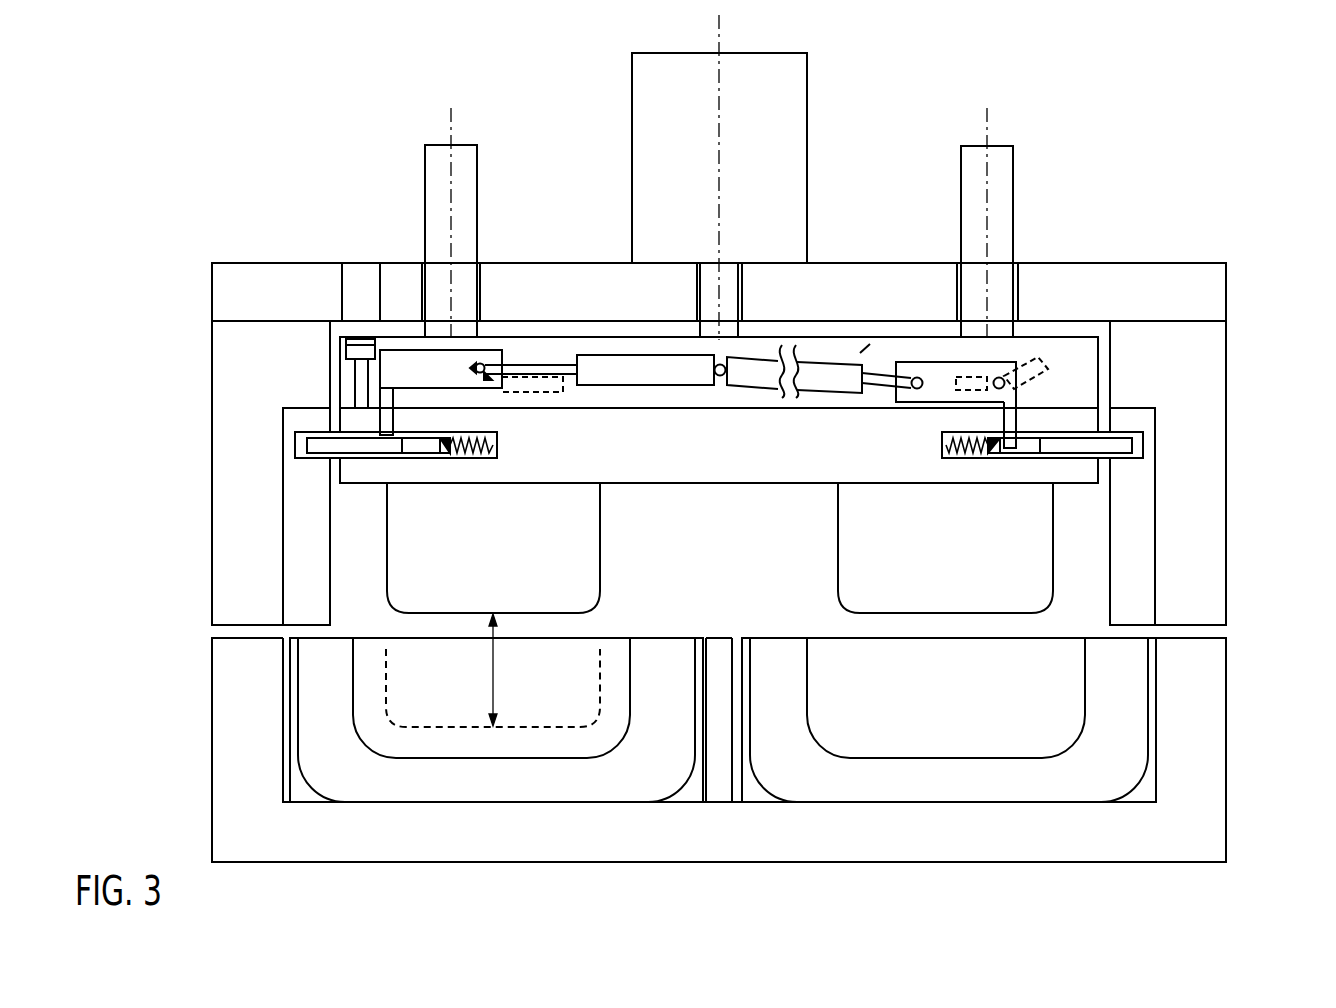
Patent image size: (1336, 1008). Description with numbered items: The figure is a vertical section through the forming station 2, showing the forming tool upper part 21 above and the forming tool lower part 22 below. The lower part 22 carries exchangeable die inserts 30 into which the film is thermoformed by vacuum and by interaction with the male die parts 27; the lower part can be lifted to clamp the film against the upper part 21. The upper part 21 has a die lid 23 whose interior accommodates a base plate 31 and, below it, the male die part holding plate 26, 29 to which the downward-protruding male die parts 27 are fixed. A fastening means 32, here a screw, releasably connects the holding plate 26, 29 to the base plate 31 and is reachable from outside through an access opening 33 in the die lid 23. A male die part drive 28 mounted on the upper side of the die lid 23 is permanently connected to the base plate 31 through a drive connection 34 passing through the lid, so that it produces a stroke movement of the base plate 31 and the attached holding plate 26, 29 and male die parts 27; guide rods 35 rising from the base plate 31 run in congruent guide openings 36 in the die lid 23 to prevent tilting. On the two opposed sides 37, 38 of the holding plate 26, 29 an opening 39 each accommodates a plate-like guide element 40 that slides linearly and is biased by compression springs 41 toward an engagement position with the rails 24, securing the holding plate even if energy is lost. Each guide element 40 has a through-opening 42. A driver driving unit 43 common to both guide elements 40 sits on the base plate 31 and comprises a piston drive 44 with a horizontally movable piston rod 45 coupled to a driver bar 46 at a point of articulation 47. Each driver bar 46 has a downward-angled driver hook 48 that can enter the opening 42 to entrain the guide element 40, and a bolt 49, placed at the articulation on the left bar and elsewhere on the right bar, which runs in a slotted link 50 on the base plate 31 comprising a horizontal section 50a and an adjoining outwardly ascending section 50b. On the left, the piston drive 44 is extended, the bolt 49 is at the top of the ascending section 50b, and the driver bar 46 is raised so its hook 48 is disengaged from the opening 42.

The forming station 2 is at (1206, 91).
The forming tool upper part 21 is at (1257, 342).
The forming tool lower part 22 is at (1257, 793).
The die lid 23 is at (228, 355).
The rails 24 is at (306, 447).
The male die part holding plate 26 is at (719, 502).
The male die part 27 is at (418, 570).
The male die part drive 28 is at (643, 82).
The male die part holding plate 29 is at (710, 478).
The die insert 30 is at (310, 758).
The base plate 31 is at (838, 345).
The fastening means 32 is at (345, 357).
The access opening 33 is at (344, 285).
The drive connection 34 is at (703, 290).
The guide rod 35 is at (437, 160).
The guide opening 36 is at (483, 302).
The side 37 is at (347, 468).
The side 38 is at (1090, 468).
The opening 39 is at (478, 468).
The guide element 40 is at (320, 443).
The spring 41 is at (482, 455).
The through-opening 42 is at (428, 468).
The driver driving unit 43 is at (859, 354).
The piston drive 44 is at (645, 385).
The piston rod 45 is at (553, 365).
The driver bar 46 is at (435, 382).
The point of articulation 47 is at (481, 362).
The driver hook 48 is at (388, 418).
The bolt 49 is at (1003, 375).
The slotted link 50 is at (549, 392).
The horizontal section 50a is at (962, 377).
The ascending section 50b is at (1033, 382).